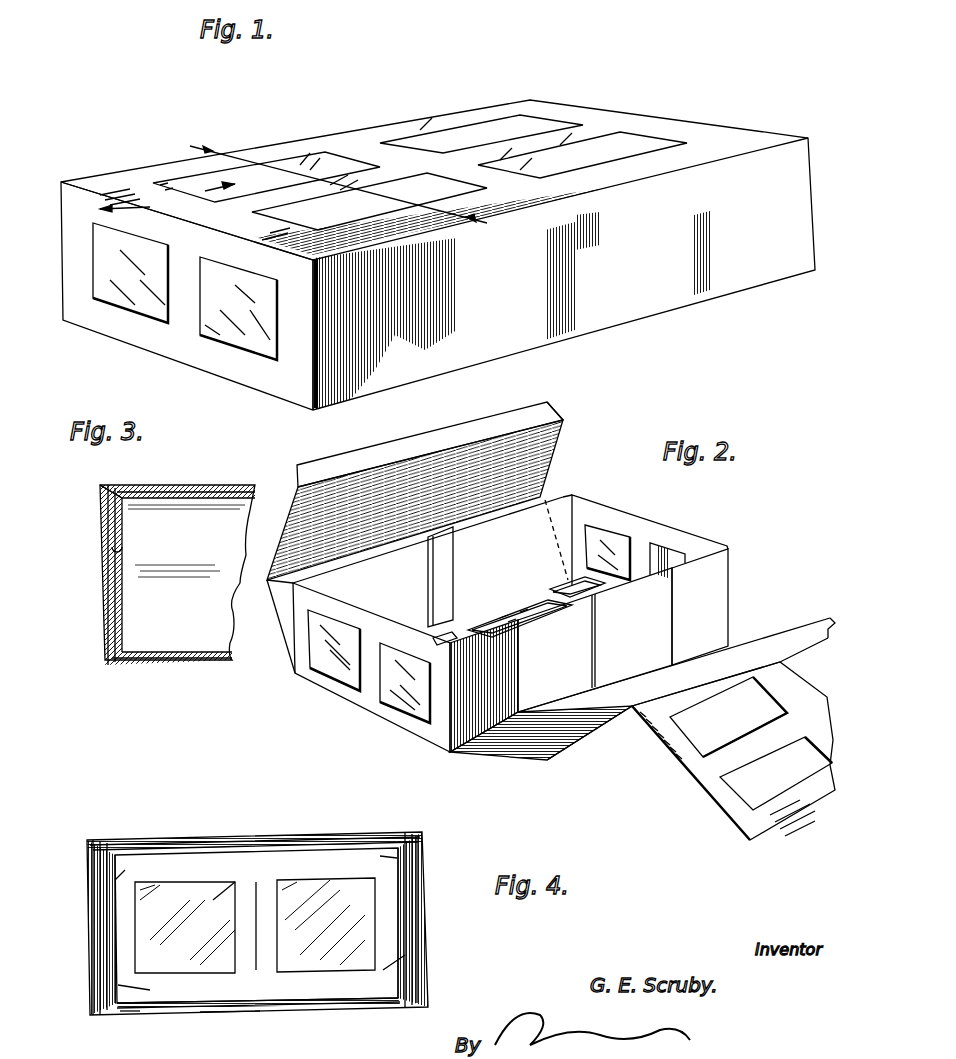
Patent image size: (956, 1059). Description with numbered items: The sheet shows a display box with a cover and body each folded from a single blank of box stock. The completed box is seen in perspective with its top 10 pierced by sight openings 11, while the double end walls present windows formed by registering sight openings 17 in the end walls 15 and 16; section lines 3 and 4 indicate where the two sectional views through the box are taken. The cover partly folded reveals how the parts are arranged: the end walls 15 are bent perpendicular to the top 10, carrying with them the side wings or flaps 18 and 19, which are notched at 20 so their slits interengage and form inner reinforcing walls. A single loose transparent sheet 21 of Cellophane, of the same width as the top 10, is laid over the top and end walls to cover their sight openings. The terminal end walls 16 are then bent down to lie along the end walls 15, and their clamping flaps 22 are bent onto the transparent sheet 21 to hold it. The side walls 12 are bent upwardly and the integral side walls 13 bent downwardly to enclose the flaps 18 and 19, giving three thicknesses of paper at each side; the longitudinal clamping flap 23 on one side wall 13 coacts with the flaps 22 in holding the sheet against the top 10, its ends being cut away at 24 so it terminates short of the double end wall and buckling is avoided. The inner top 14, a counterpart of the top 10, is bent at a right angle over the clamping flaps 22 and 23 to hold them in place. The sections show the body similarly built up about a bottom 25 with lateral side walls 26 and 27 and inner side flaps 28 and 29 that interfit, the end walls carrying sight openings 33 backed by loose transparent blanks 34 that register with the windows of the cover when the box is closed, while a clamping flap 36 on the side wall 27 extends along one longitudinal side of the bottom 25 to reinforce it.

In FIG. 1, the section line 3— 3 is at (164, 198).
In FIG. 1, the section line 4— 4 is at (335, 186).
In FIG. 1, the top 10 is at (353, 142).
In FIG. 3, the top 10 is at (140, 488).
In FIG. 4, the top 10 is at (244, 838).
In FIG. 1, the sight openings 11 is at (443, 122).
In FIG. 2, the sight openings 11 is at (505, 610).
In FIG. 1, the side wall 12 is at (511, 310).
In FIG. 2, the side wall 12 is at (283, 633).
In FIG. 4, the side wall 12 is at (93, 965).
In FIG. 2, the side wall 13 is at (603, 765).
In FIG. 4, the side wall 13 is at (93, 992).
In FIG. 2, the inner top 14 is at (695, 767).
In FIG. 3, the inner top 14 is at (138, 498).
In FIG. 1, the end wall 15 is at (183, 342).
In FIG. 2, the end wall 15 is at (372, 684).
In FIG. 3, the end wall 15 is at (103, 640).
In FIG. 2, the end wall 16 is at (640, 550).
In FIG. 3, the end wall 16 is at (104, 648).
In FIG. 1, the sight openings 17 is at (237, 386).
In FIG. 2, the sight openings 17 is at (348, 626).
In FIG. 2, the side wing or flap 18 is at (702, 603).
In FIG. 4, the side wing or flap 18 is at (93, 907).
In FIG. 2, the side wing or flap 19 is at (562, 493).
In FIG. 4, the side wing or flap 19 is at (423, 878).
In FIG. 2, the notches 20 is at (437, 562).
In FIG. 1, the transparent sheet 21 is at (390, 219).
In FIG. 2, the transparent sheet 21 is at (534, 613).
In FIG. 3, the transparent sheet 21 is at (193, 487).
In FIG. 4, the transparent sheet 21 is at (184, 840).
In FIG. 2, the clamping flaps 22 is at (553, 563).
In FIG. 2, the clamping flap 23 is at (548, 407).
In FIG. 2, the cut away ends 24 is at (293, 467).
In FIG. 4, the bottom 25 is at (227, 1013).
In FIG. 4, the side wall 26 is at (116, 952).
In FIG. 4, the side wall 27 is at (122, 985).
In FIG. 4, the inner side flap 28 is at (115, 880).
In FIG. 4, the inner side flap 29 is at (397, 858).
In FIG. 4, the sight openings 33 is at (274, 925).
In FIG. 4, the transparent blanks 34 is at (213, 900).
In FIG. 4, the clamping flap 36 is at (133, 1012).